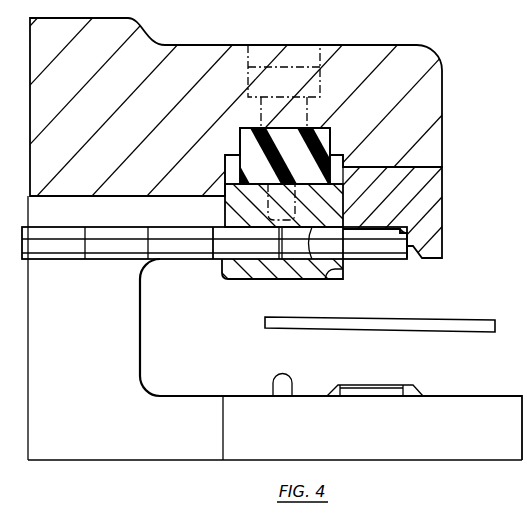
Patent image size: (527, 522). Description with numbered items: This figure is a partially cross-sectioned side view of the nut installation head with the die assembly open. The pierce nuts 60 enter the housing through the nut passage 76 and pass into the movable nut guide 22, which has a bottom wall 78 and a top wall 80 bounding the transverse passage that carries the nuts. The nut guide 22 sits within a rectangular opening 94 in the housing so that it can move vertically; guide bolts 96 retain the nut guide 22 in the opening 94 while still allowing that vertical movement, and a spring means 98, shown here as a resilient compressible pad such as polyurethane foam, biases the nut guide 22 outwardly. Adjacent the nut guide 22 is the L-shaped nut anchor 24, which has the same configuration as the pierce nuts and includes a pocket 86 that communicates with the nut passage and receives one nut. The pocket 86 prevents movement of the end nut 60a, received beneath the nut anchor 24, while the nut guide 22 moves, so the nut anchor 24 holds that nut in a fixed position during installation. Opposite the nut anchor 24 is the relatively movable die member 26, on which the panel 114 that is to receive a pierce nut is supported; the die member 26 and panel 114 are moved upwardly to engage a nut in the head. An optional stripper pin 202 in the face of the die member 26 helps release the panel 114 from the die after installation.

The nut guide 22 is at (237, 200).
The nut anchor 24 is at (432, 192).
The die member 26 is at (455, 437).
The nuts 60 is at (182, 250).
The end nut 60a is at (393, 248).
The nut passage 76 is at (140, 197).
The bottom wall 78 is at (222, 264).
The top wall 80 is at (316, 279).
The pocket 86 is at (408, 231).
The rectangular opening 94 is at (227, 152).
The guide bolts 96 is at (305, 66).
The spring means 98 is at (332, 137).
The panel 114 is at (463, 318).
The stripper pin 202 is at (287, 372).